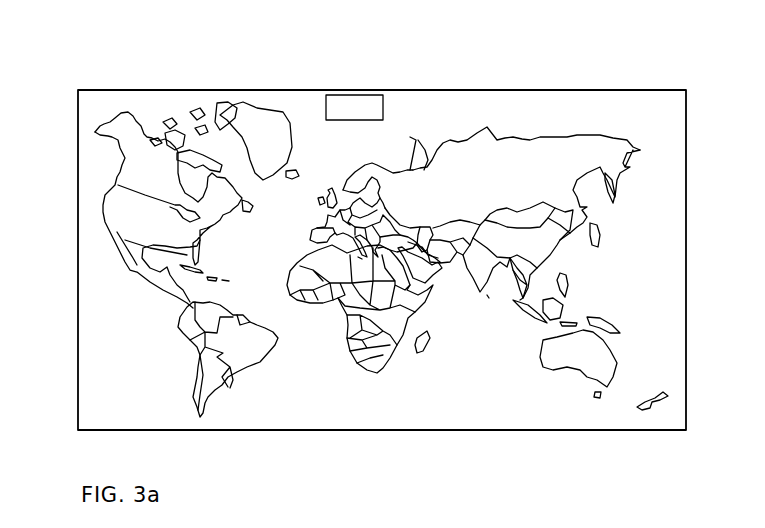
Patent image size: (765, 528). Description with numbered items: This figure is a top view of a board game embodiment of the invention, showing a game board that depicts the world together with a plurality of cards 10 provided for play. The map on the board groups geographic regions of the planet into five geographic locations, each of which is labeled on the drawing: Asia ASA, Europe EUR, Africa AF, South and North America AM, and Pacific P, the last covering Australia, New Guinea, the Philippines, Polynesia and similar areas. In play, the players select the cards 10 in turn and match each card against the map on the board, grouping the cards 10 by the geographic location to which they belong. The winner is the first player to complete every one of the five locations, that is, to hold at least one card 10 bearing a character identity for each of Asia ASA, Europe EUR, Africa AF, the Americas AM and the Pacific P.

The cards 10 is at (350, 102).
The South and North America geographic location AM is at (92, 234).
The Europe geographic location EUR is at (427, 180).
The Asia geographic location ASA is at (563, 188).
The Africa geographic location AF is at (378, 372).
The Pacific geographic location P is at (635, 317).